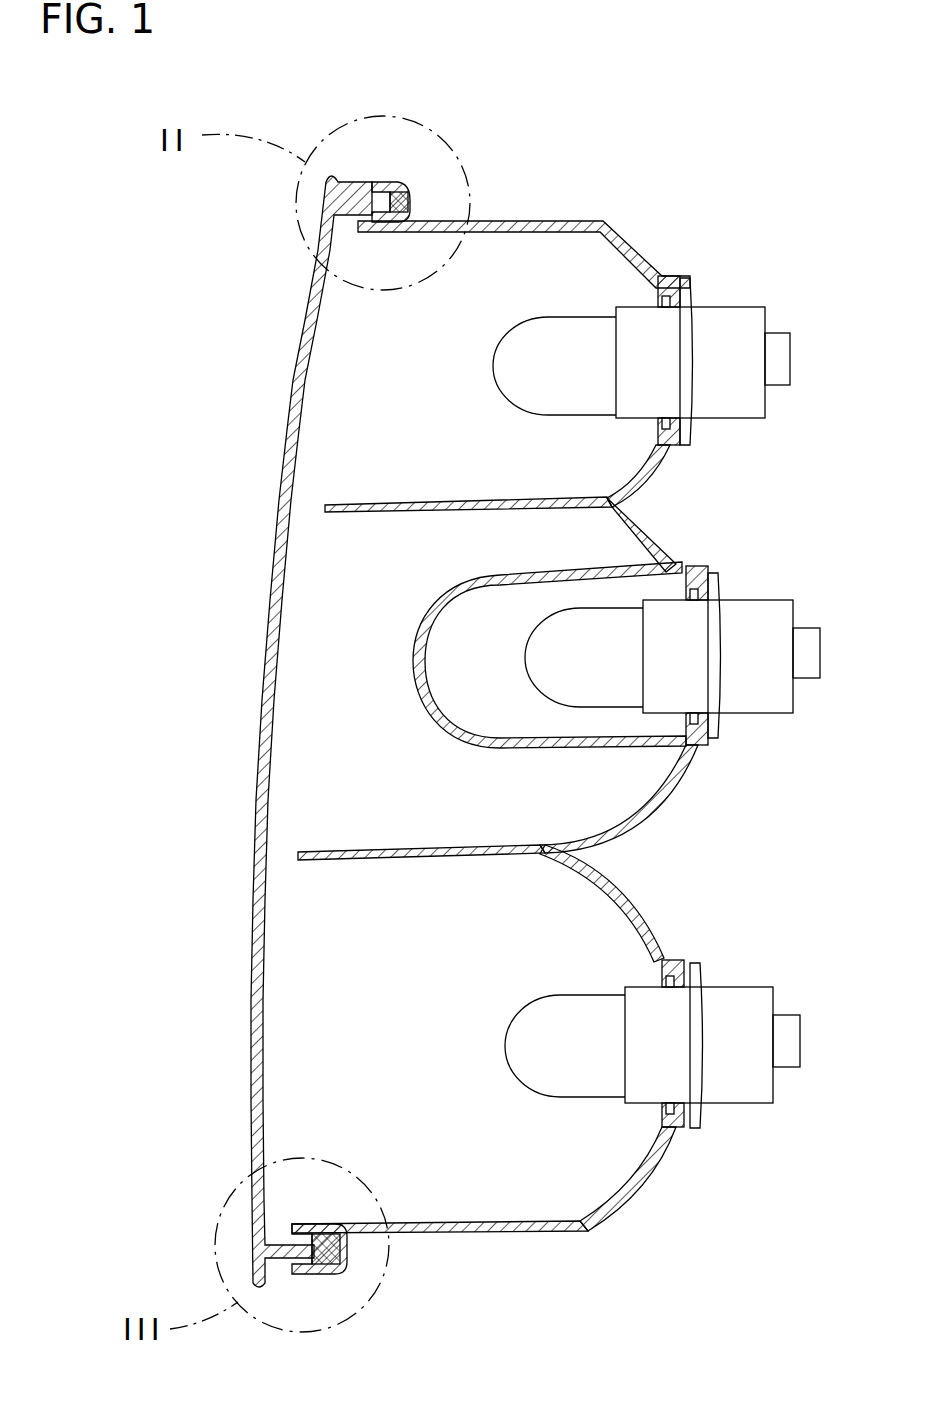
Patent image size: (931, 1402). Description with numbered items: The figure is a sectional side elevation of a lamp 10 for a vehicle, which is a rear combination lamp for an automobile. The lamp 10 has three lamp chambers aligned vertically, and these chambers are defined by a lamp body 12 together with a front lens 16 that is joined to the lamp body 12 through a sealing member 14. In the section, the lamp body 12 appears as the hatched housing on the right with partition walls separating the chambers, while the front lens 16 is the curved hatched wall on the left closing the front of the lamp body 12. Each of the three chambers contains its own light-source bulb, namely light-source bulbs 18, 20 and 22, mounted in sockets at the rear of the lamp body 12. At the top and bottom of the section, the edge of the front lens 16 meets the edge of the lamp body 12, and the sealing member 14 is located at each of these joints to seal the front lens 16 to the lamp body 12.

The lamp 10 is at (258, 299).
The lamp body 12 is at (562, 218).
The sealing member 14 is at (407, 197).
The front lens 16 is at (289, 430).
The light-source bulb 18 is at (493, 367).
The light-source bulb 20 is at (525, 645).
The light-source bulb 22 is at (505, 1050).